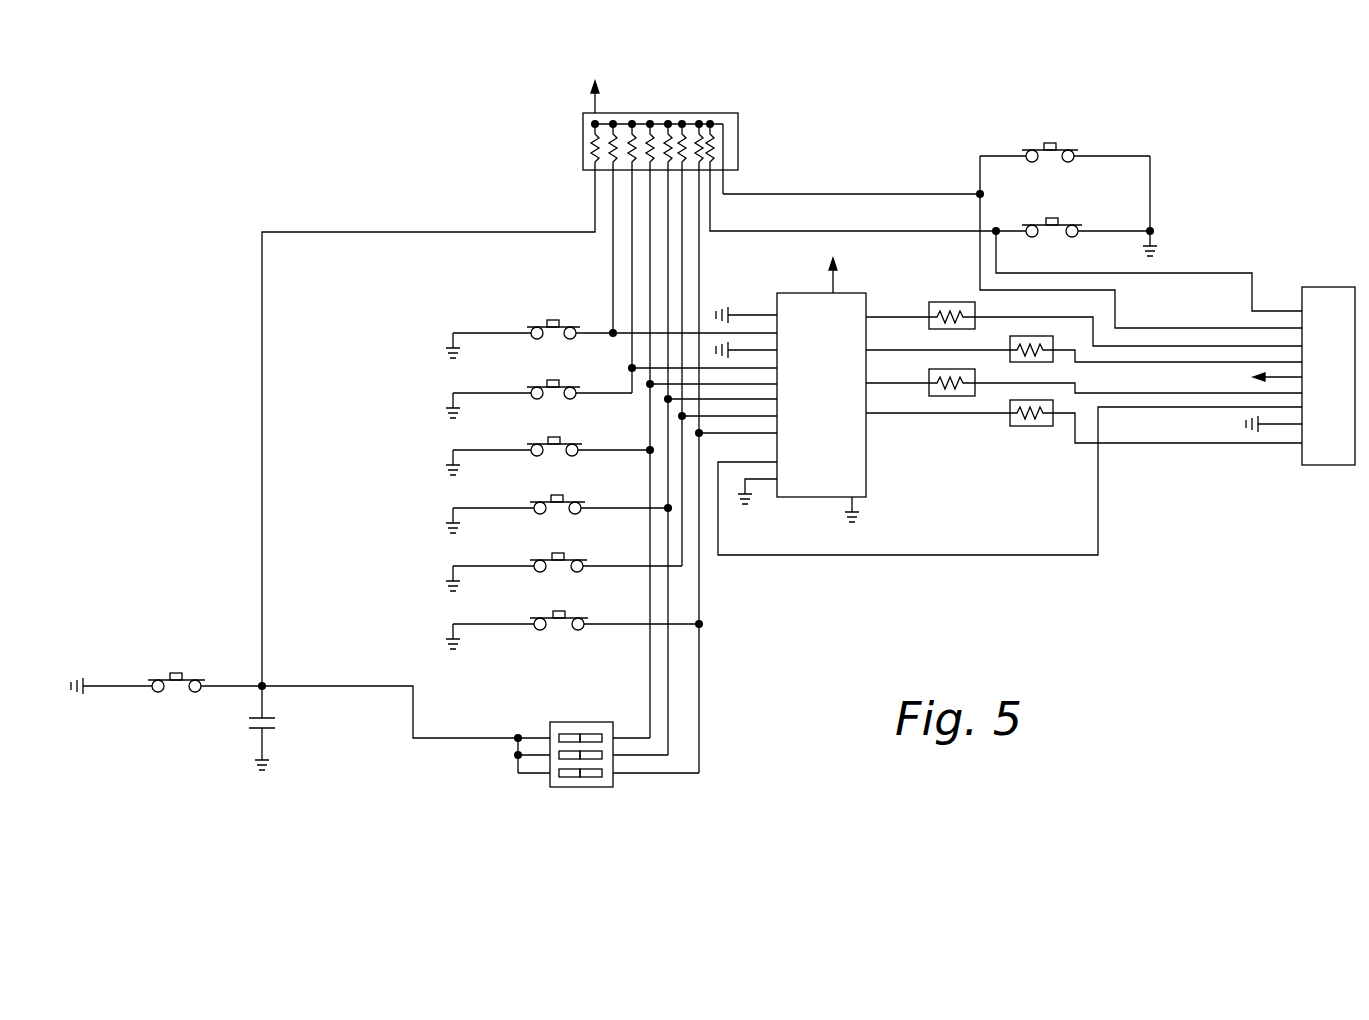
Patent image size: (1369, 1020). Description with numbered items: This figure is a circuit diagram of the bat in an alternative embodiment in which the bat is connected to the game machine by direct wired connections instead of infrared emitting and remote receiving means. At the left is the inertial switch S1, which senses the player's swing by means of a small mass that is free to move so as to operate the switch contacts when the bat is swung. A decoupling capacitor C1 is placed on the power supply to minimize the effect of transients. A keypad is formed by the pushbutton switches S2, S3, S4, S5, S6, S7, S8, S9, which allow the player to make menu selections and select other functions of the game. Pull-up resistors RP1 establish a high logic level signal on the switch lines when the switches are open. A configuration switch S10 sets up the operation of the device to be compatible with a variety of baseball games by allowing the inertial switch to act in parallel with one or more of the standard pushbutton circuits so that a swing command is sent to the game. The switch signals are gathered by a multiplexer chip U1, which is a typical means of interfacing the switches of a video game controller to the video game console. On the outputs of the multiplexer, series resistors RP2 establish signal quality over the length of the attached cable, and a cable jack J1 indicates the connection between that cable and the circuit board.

The pull-up resistors RP1 is at (583, 163).
The multiplexer chip U1 is at (795, 295).
The series resistors RP2 is at (950, 302).
The cable jack J1 is at (1323, 292).
The pushbutton switch S5 is at (1048, 143).
The pushbutton switch S2 is at (1060, 218).
The pushbutton switch S4 is at (548, 320).
The pushbutton switch S3 is at (548, 380).
The pushbutton switch S6 is at (548, 437).
The pushbutton switch S7 is at (551, 495).
The pushbutton switch S9 is at (552, 553).
The pushbutton switch S8 is at (552, 611).
The configuration switch S10 is at (580, 722).
The inertial switch S1 is at (172, 673).
The decoupling capacitor C1 is at (255, 727).